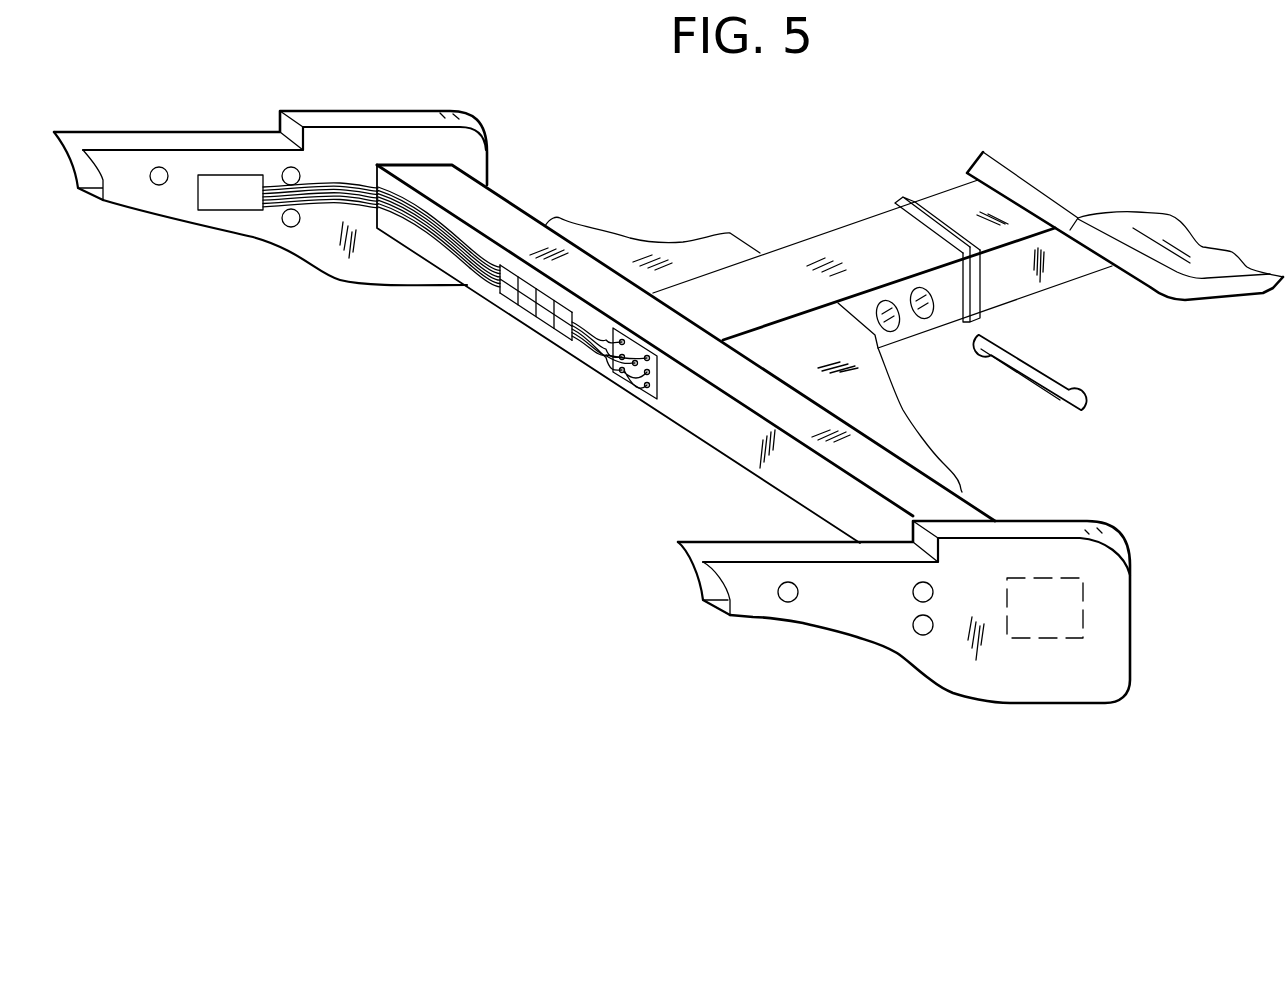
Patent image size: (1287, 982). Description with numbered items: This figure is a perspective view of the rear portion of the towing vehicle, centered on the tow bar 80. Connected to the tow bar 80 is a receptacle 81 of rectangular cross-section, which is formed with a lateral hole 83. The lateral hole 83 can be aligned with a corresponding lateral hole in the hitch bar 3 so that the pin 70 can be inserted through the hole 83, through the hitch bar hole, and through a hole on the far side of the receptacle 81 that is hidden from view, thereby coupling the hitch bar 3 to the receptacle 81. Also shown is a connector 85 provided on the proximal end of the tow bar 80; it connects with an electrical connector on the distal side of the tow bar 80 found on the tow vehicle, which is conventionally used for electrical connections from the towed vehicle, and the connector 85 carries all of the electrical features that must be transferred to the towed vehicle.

The hitch bar 3 is at (1198, 310).
The pin 70 is at (1057, 387).
The tow bar 80 is at (736, 462).
The rectangular cross-section receptacle 81 is at (830, 248).
The lateral hole 83 is at (925, 320).
The connector 85 is at (634, 389).